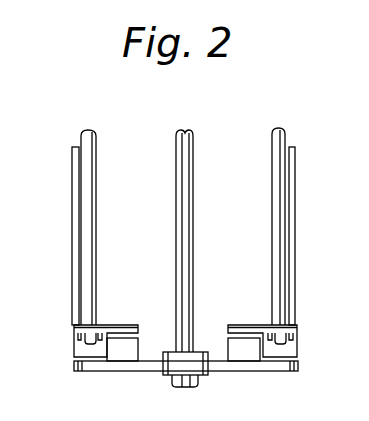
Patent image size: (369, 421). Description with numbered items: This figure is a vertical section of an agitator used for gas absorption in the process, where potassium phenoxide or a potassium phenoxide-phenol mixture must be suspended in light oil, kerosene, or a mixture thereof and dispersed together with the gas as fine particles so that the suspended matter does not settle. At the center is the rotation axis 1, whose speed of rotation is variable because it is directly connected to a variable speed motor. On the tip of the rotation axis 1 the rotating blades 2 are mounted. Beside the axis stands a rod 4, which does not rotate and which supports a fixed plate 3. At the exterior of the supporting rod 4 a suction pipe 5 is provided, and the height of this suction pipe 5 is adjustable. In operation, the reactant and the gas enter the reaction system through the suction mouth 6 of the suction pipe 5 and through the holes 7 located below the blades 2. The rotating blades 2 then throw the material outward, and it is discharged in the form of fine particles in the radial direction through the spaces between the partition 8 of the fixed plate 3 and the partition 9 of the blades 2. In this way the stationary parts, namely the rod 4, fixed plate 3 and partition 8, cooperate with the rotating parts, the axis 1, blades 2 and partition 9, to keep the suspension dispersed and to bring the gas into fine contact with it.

The rotation axis 1 is at (184, 177).
The rotating blades 2 is at (248, 365).
The fixed plate 3 is at (292, 330).
The rod 4 is at (280, 133).
The suction pipe 5 is at (295, 172).
The suction mouth 6 is at (80, 145).
The holes 7 is at (153, 373).
The partition 8 is at (78, 348).
The partition 9 is at (128, 357).